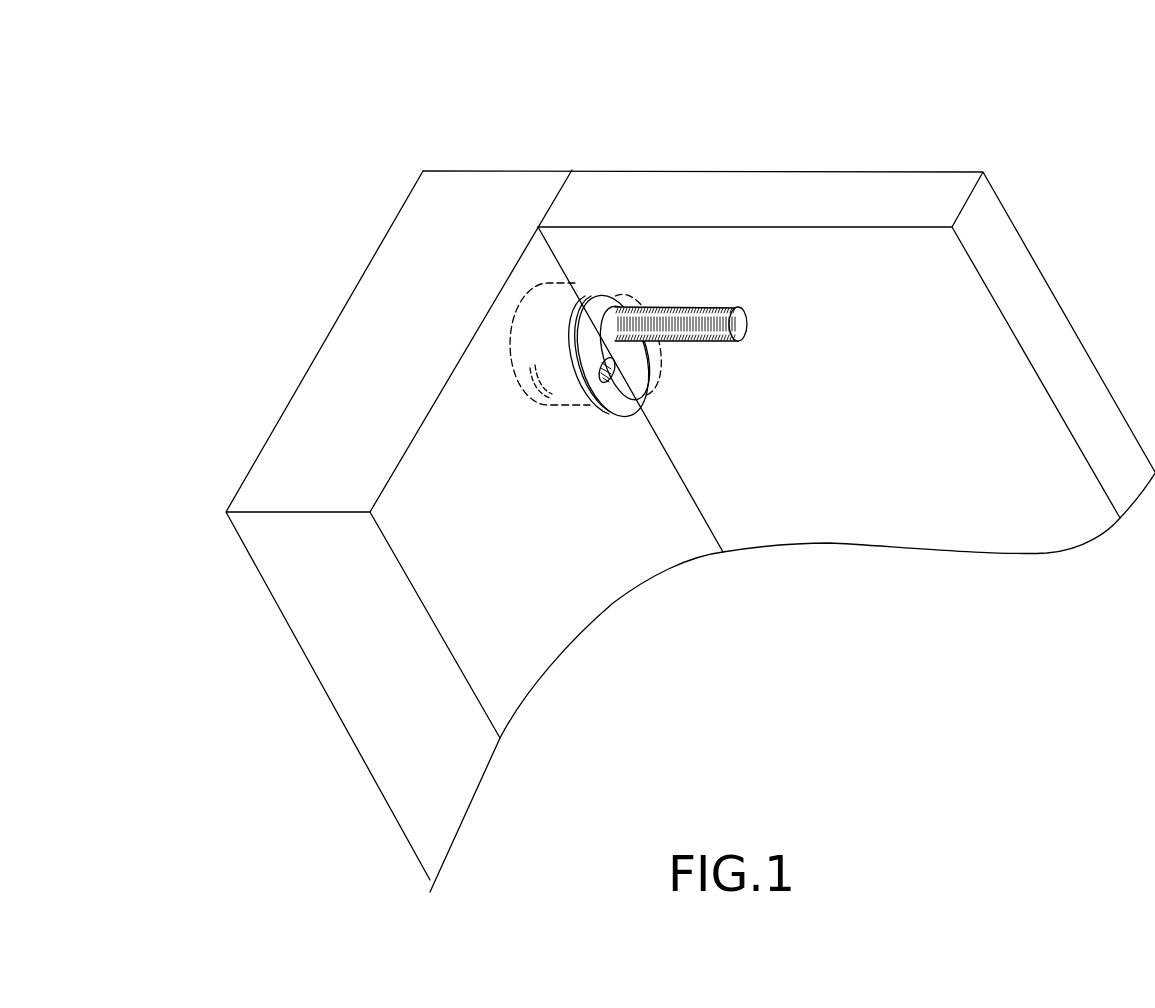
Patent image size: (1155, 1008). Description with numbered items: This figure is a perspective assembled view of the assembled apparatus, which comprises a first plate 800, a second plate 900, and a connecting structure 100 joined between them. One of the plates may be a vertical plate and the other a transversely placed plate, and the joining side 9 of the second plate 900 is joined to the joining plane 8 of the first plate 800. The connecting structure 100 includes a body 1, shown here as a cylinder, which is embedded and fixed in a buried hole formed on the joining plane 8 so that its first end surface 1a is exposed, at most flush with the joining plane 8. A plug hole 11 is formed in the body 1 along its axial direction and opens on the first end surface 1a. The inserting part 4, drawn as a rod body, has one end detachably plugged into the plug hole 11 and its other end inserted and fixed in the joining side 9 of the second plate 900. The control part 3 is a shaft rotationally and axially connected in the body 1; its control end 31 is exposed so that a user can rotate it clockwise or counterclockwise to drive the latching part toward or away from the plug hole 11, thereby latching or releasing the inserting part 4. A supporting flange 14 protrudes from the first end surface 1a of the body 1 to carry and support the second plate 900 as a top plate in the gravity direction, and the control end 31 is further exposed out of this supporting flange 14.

The second plate 900 is at (820, 167).
The first plate 800 is at (335, 318).
The joining side 9 is at (550, 197).
The joining plane 8 is at (432, 555).
The body 1 is at (640, 296).
The supporting flange 14 is at (598, 304).
The plug hole 11 is at (637, 303).
The first end surface 1a is at (633, 352).
The inserting part 4 is at (717, 293).
The control part 3 is at (621, 368).
The control end 31 is at (643, 398).
The connecting structure 100 is at (637, 348).